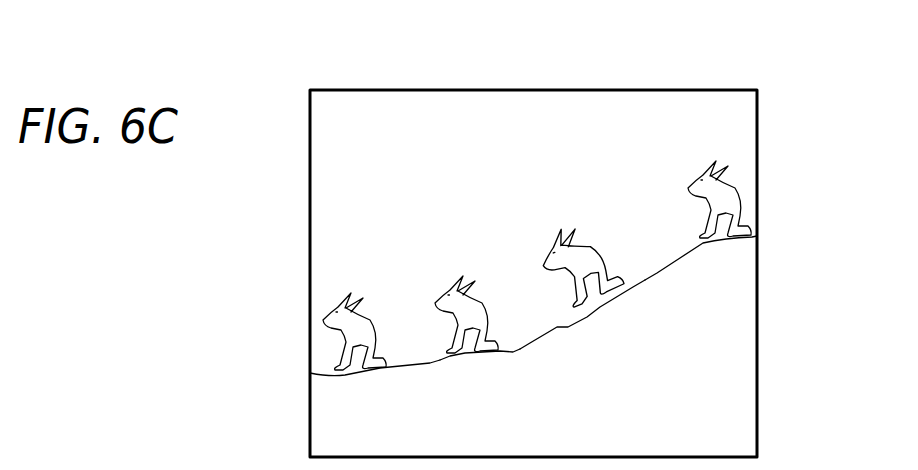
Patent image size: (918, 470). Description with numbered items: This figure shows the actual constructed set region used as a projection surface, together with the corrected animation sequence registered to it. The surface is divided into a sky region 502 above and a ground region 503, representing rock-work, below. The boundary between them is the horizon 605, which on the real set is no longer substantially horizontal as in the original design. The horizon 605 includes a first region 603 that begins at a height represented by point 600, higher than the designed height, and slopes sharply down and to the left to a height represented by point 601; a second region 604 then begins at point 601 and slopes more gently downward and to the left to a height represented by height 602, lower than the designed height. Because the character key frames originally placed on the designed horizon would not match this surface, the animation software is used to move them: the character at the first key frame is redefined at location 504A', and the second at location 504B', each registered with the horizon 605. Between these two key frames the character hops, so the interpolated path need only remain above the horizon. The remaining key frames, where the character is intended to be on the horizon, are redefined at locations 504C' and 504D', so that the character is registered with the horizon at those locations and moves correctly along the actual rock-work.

The sky region 502 is at (592, 108).
The ground region 503 is at (718, 417).
The redefined key frame location A 504A' is at (685, 175).
The redefined key frame location B 504B' is at (566, 229).
The redefined key frame location C 504C' is at (460, 269).
The redefined key frame location D 504D' is at (361, 288).
The starting height point 600 is at (308, 273).
The intermediate height point 601 is at (308, 307).
The ending height 602 is at (310, 373).
The first region of the horizon 603 is at (660, 282).
The ground line lower segment 604 is at (438, 365).
The horizon 605 is at (530, 345).